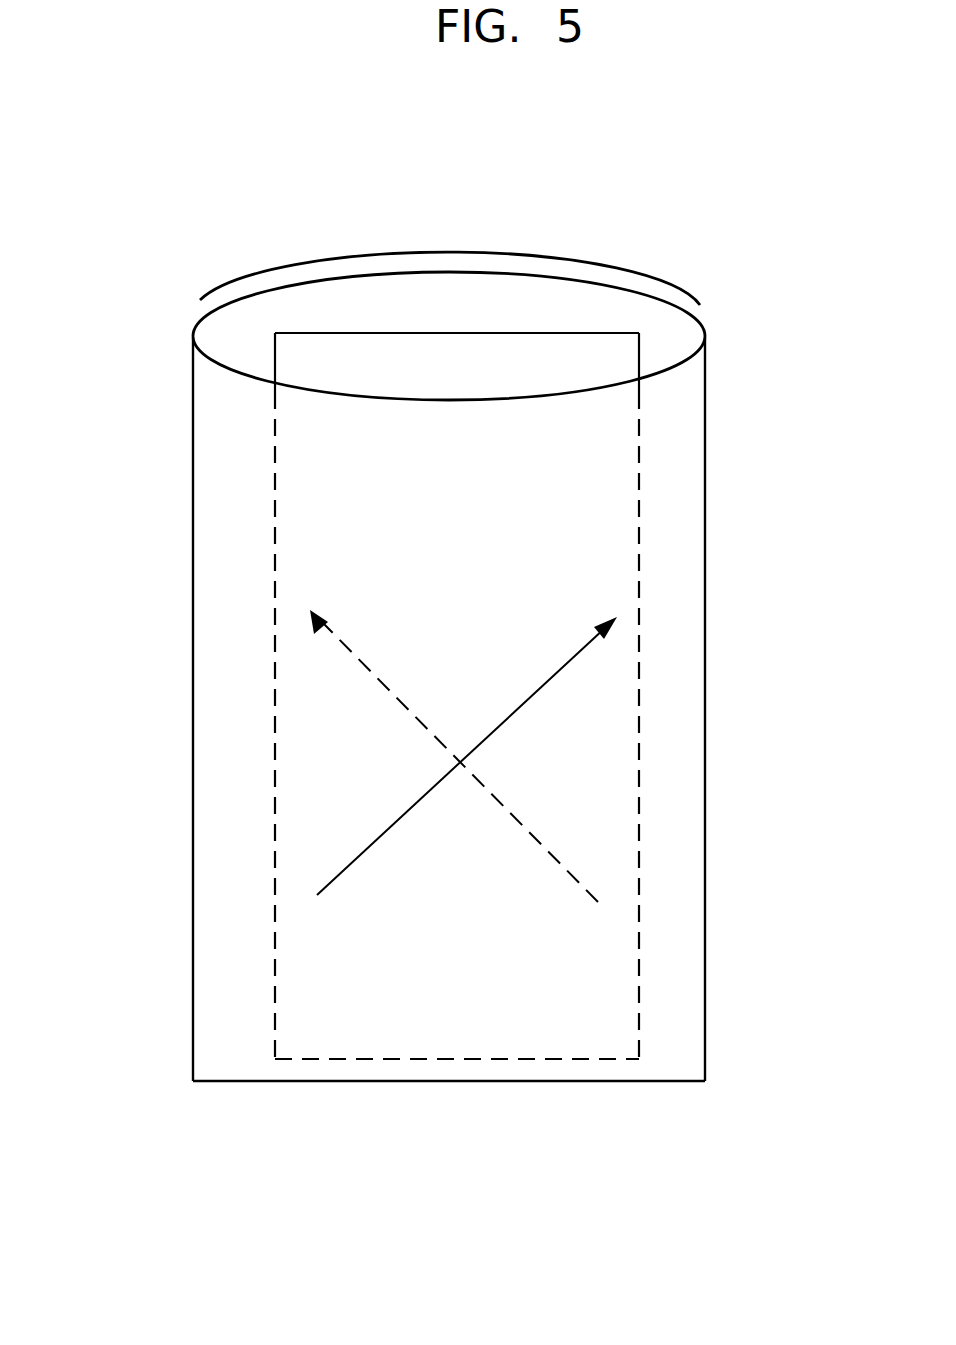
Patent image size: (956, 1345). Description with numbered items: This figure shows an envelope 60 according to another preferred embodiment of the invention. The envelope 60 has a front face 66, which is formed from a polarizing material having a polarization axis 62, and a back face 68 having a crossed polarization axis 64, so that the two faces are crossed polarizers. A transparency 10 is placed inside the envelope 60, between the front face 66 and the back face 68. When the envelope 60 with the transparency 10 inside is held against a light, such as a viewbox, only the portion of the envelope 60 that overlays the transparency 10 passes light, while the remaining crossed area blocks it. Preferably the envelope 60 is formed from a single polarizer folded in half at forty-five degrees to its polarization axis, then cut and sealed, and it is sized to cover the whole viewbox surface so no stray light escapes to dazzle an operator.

The envelope 60 is at (652, 1125).
The front face 66 is at (222, 358).
The back face 68 is at (443, 270).
The transparency 10 is at (579, 333).
The polarization axis 62 is at (565, 665).
The crossed polarization axis 64 is at (375, 685).